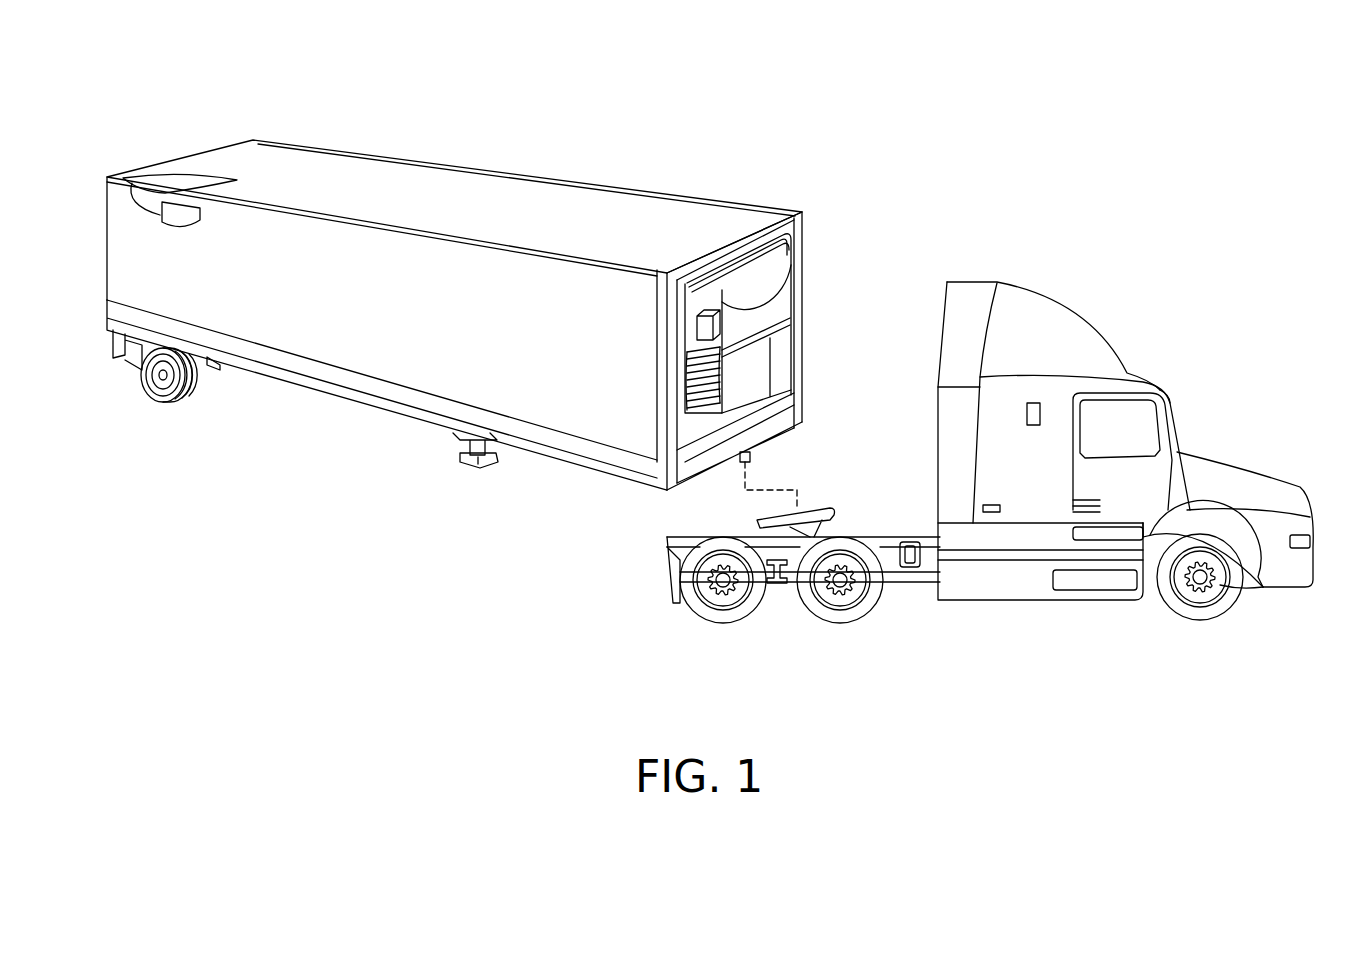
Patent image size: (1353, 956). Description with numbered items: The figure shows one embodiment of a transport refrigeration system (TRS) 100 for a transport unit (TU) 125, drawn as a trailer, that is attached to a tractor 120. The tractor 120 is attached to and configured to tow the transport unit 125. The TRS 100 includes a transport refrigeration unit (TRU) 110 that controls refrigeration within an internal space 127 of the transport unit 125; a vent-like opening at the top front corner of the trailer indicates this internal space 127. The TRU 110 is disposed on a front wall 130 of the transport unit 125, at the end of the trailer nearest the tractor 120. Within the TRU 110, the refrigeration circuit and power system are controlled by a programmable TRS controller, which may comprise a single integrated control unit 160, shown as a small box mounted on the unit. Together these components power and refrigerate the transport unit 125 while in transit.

The transport refrigeration system (TRS) 100 is at (933, 148).
The transport refrigeration unit (TRU) 110 is at (780, 307).
The tractor 120 is at (1235, 483).
The transport unit (TU) 125 is at (492, 198).
The internal space 127 is at (160, 192).
The front wall 130 is at (788, 228).
The single integrated control unit 160 is at (708, 312).